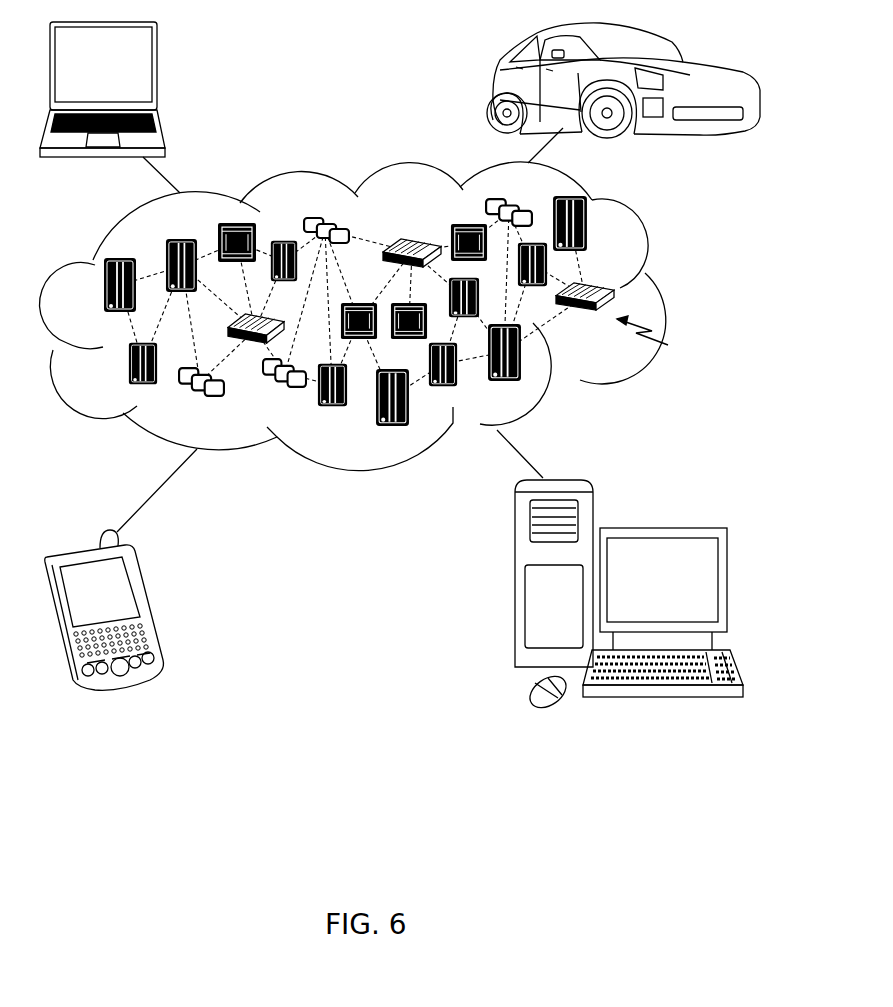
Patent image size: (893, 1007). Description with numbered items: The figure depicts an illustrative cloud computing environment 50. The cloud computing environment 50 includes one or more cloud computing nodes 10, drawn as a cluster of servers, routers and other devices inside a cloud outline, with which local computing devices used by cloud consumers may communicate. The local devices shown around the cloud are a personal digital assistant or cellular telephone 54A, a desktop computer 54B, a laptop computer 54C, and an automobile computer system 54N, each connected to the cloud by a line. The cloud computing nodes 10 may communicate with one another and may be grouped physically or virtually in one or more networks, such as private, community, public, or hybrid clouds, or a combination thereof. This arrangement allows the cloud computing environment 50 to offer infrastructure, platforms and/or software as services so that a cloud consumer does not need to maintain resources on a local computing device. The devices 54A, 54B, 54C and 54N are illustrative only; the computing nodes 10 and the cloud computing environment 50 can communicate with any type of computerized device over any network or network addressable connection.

The cloud computing node 10 is at (653, 336).
The cloud computing environment 50 is at (660, 300).
The personal digital assistant or cellular telephone 54A is at (150, 602).
The desktop computer 54B is at (660, 527).
The laptop computer 54C is at (163, 70).
The automobile computer system 54N is at (492, 82).